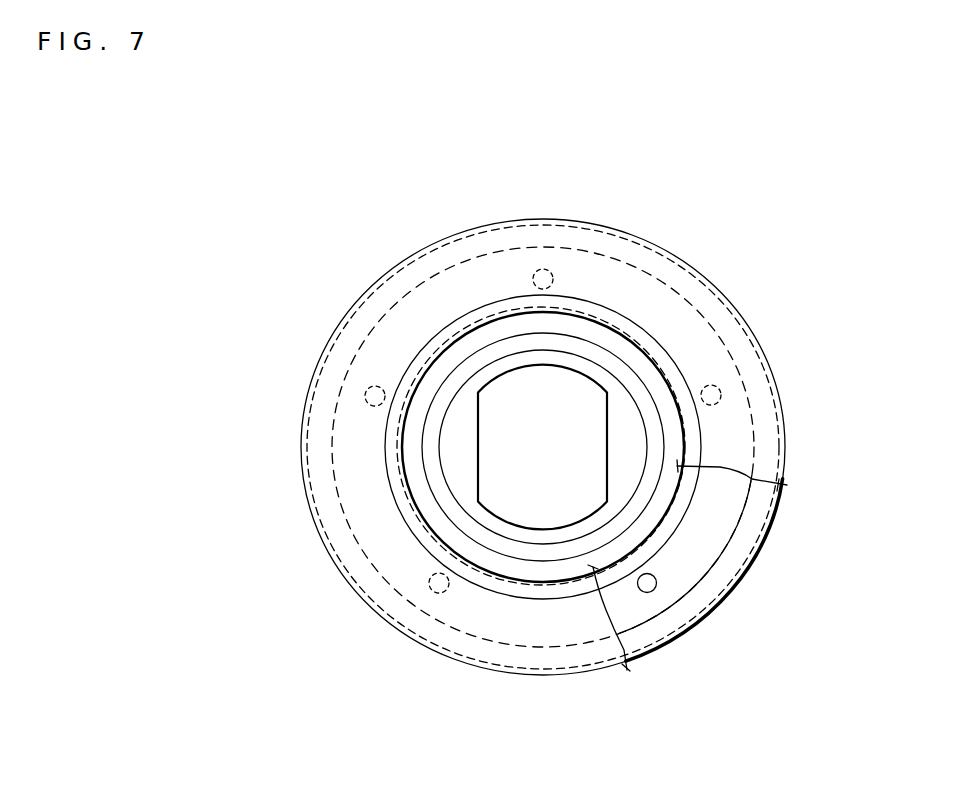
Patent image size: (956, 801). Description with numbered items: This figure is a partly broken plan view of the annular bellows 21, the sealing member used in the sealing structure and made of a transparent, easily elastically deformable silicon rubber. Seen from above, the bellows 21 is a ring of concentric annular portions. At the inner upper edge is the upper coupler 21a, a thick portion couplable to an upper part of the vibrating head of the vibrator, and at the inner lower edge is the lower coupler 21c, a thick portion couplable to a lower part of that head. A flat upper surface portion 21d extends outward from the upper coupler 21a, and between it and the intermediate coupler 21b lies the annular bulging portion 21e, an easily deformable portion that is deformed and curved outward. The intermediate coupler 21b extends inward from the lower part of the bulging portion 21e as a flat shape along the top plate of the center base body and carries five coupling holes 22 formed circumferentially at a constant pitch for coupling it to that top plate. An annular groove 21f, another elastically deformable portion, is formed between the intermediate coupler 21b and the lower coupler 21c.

The annular bellows 21 is at (358, 287).
The upper coupler 21a is at (668, 368).
The intermediate coupler 21b is at (724, 521).
The lower coupler 21c is at (550, 540).
The flat upper surface portion 21d is at (732, 448).
The bulging portion 21e is at (712, 610).
The groove 21f is at (666, 498).
The coupling holes 22 is at (651, 592).